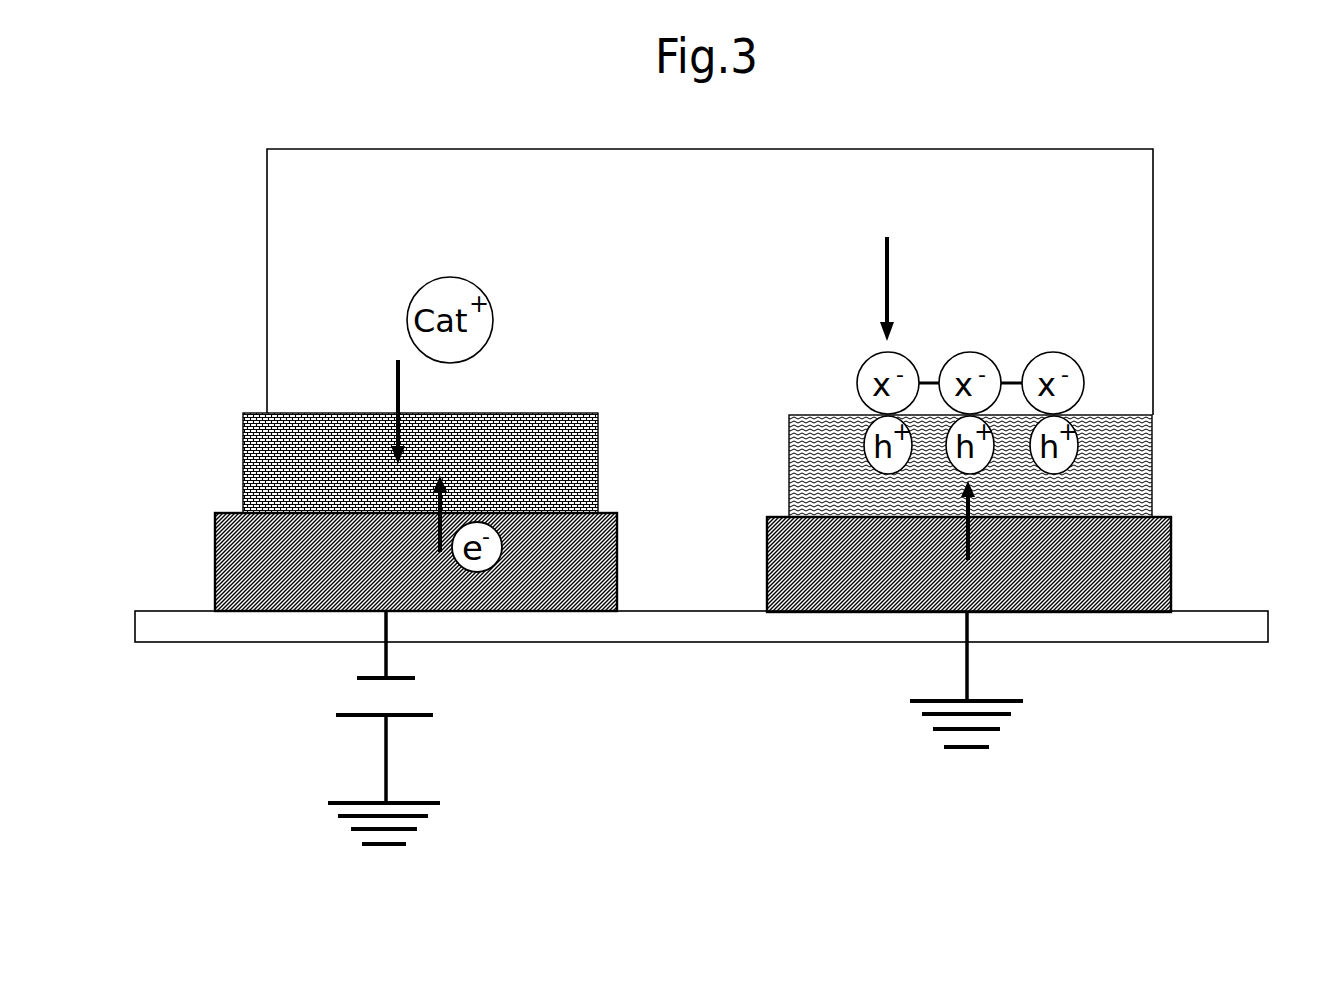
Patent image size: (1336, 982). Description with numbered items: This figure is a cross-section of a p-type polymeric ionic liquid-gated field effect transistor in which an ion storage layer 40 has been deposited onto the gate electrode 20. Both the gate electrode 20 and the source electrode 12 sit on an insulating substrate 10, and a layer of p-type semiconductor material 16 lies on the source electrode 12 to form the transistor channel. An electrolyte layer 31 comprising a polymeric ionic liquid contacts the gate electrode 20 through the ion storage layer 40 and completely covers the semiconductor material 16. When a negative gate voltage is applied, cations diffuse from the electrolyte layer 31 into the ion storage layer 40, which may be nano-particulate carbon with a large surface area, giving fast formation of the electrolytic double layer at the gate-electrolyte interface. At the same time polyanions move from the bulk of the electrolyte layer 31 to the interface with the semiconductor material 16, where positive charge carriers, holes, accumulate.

The insulating substrate 10 is at (667, 632).
The source electrode 12 is at (1155, 572).
The semiconductor material 16 is at (1143, 450).
The gate electrode 20 is at (267, 583).
The electrolyte layer 31 is at (402, 192).
The ion storage layer 40 is at (252, 473).